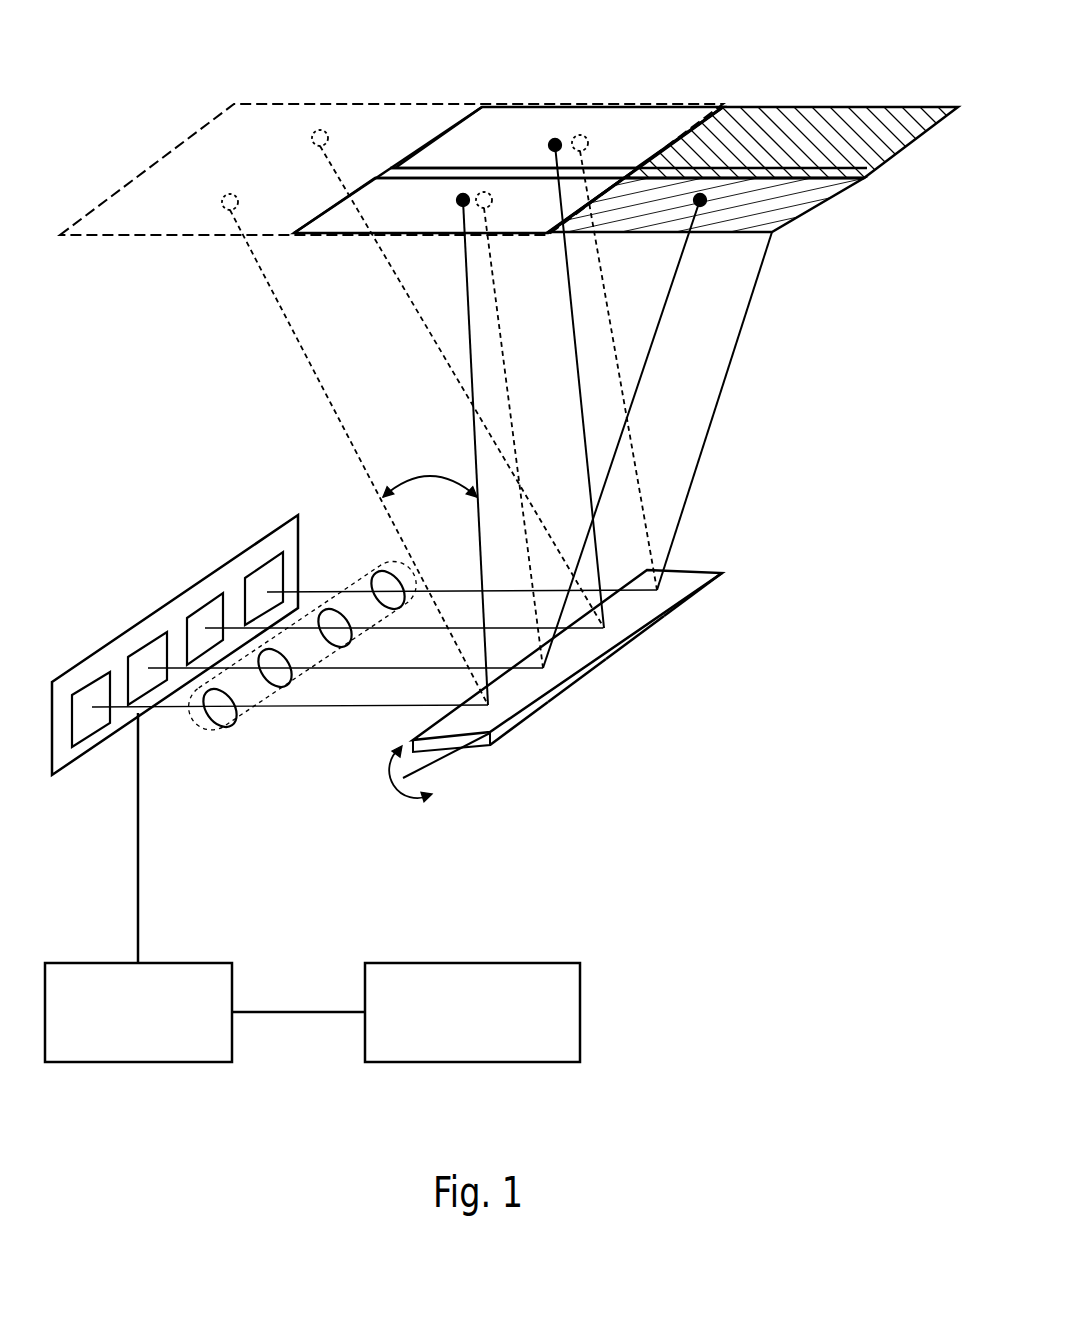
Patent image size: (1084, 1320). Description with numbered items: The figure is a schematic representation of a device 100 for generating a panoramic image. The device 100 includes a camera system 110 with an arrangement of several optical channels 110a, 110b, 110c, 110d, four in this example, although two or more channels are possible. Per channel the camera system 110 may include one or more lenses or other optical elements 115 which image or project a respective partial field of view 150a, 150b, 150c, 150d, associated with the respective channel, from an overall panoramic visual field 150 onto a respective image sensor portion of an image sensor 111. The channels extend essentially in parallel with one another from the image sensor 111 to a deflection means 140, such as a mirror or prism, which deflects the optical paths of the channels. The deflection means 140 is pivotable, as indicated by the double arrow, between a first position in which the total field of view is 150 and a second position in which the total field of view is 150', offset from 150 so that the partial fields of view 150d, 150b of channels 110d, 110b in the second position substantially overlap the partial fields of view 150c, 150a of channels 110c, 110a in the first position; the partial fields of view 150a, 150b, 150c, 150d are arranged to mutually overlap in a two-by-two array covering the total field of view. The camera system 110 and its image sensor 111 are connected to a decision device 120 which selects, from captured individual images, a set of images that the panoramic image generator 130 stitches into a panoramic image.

The device for generating a panoramic image 100 is at (105, 397).
The camera system 110 is at (642, 673).
The optical channel 110a is at (539, 730).
The optical channel 110b is at (596, 684).
The optical channel 110c is at (657, 641).
The optical channel 110d is at (711, 601).
The image sensor 111 is at (170, 604).
The optical elements 115 is at (240, 727).
The decision device 120 is at (138, 1064).
The panoramic image generator 130 is at (477, 1064).
The deflection means 140 is at (470, 746).
The total field of view 150 is at (665, 360).
The total field of view in second position 150' is at (390, 404).
The partial field of view 150a is at (337, 236).
The partial field of view 150b is at (808, 207).
The partial field of view 150c is at (600, 105).
The partial field of view 150d is at (827, 105).